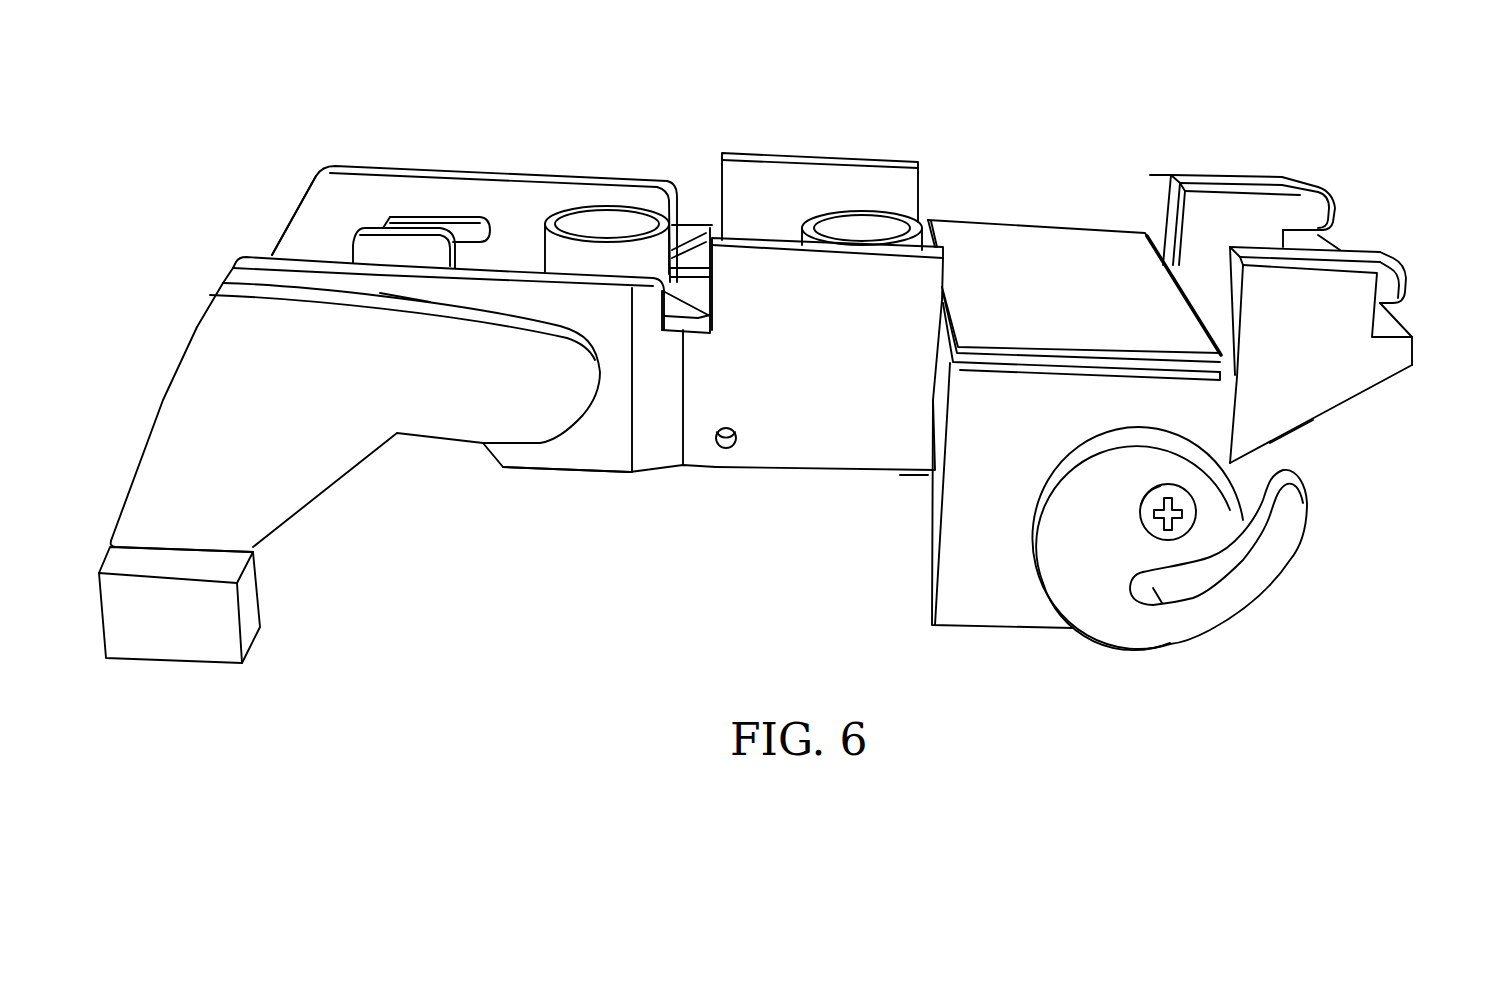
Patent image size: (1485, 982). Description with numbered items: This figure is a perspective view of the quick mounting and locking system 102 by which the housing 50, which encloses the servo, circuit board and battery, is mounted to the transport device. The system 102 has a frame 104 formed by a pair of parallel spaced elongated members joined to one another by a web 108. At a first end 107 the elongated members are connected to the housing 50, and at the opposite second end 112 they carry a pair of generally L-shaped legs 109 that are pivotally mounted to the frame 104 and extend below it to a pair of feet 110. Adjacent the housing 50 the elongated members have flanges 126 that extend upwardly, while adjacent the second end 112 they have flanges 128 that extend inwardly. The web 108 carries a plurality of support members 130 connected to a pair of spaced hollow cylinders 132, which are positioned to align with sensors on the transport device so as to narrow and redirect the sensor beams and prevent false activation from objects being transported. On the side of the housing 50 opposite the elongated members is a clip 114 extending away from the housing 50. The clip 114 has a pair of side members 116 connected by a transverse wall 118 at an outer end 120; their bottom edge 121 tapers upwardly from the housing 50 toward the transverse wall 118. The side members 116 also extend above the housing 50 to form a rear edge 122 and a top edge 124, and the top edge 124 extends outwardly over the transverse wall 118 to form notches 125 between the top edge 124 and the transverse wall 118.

The housing 50 is at (1017, 228).
The quick mounting and locking system 102 is at (929, 80).
The frame 104 is at (800, 492).
The first end 107 is at (923, 505).
The web 108 is at (705, 188).
The legs 109 is at (440, 400).
The feet 110 is at (250, 604).
The second end 112 is at (299, 198).
The clip 114 is at (1276, 129).
The side members 116 is at (1178, 200).
The transverse wall 118 is at (1414, 343).
The outer end 120 is at (1380, 390).
The bottom edge 121 is at (1290, 442).
The rear edge 122 is at (1165, 228).
The top edge 124 is at (1220, 173).
The notches 125 is at (1330, 242).
The flanges 126 is at (820, 165).
The flanges 128 is at (414, 230).
The support members 130 is at (688, 240).
The hollow cylinders 132 is at (588, 215).